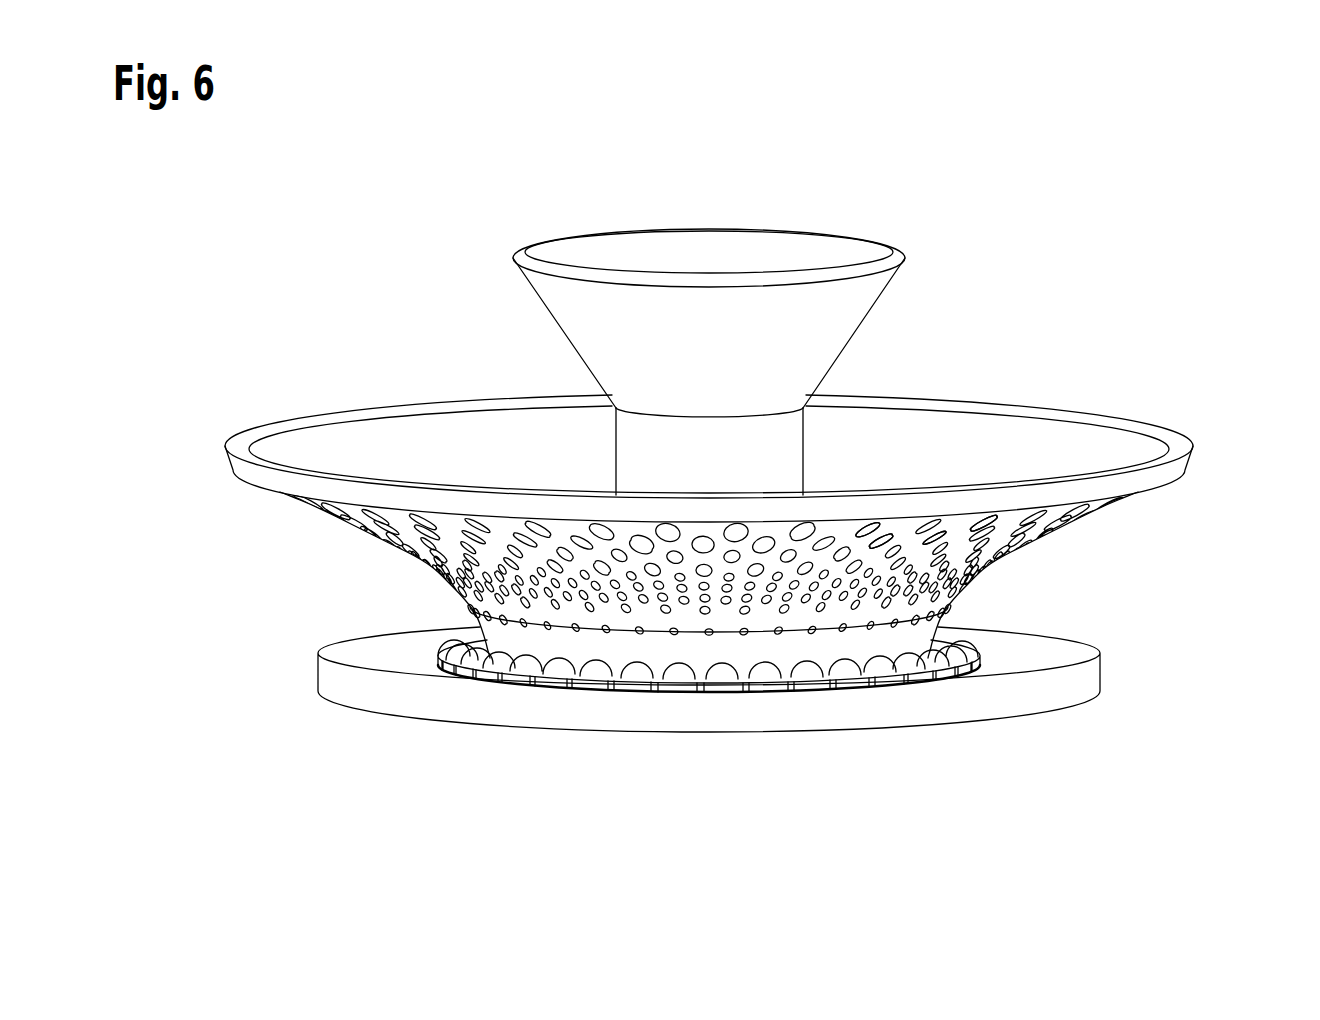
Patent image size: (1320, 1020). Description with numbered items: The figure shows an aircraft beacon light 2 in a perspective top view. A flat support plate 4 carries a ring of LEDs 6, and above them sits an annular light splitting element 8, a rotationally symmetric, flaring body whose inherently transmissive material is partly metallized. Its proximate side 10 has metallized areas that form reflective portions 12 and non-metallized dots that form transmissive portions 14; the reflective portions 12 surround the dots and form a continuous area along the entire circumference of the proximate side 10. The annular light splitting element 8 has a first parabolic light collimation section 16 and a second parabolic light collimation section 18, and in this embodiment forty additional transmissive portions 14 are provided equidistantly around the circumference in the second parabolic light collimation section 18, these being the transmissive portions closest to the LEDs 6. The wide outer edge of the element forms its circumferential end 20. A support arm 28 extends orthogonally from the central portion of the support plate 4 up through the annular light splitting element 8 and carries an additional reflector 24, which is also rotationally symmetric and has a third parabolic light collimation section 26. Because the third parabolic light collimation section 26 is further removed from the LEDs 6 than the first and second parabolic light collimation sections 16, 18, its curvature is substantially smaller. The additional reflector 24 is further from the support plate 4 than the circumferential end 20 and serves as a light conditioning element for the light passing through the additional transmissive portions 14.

The aircraft beacon light 2 is at (199, 382).
The support plate 4 is at (1082, 692).
The LEDs 6 is at (965, 640).
The annular light splitting element 8 is at (1203, 445).
The proximate side 10 is at (1107, 522).
The reflective portions 12 is at (960, 532).
The transmissive portions 14 is at (887, 530).
The first parabolic light collimation section 16 is at (431, 567).
The second parabolic light collimation section 18 is at (622, 648).
The circumferential end 20 is at (233, 468).
The additional reflector 24 is at (521, 317).
The third parabolic light collimation section 26 is at (856, 334).
The support arm 28 is at (815, 472).